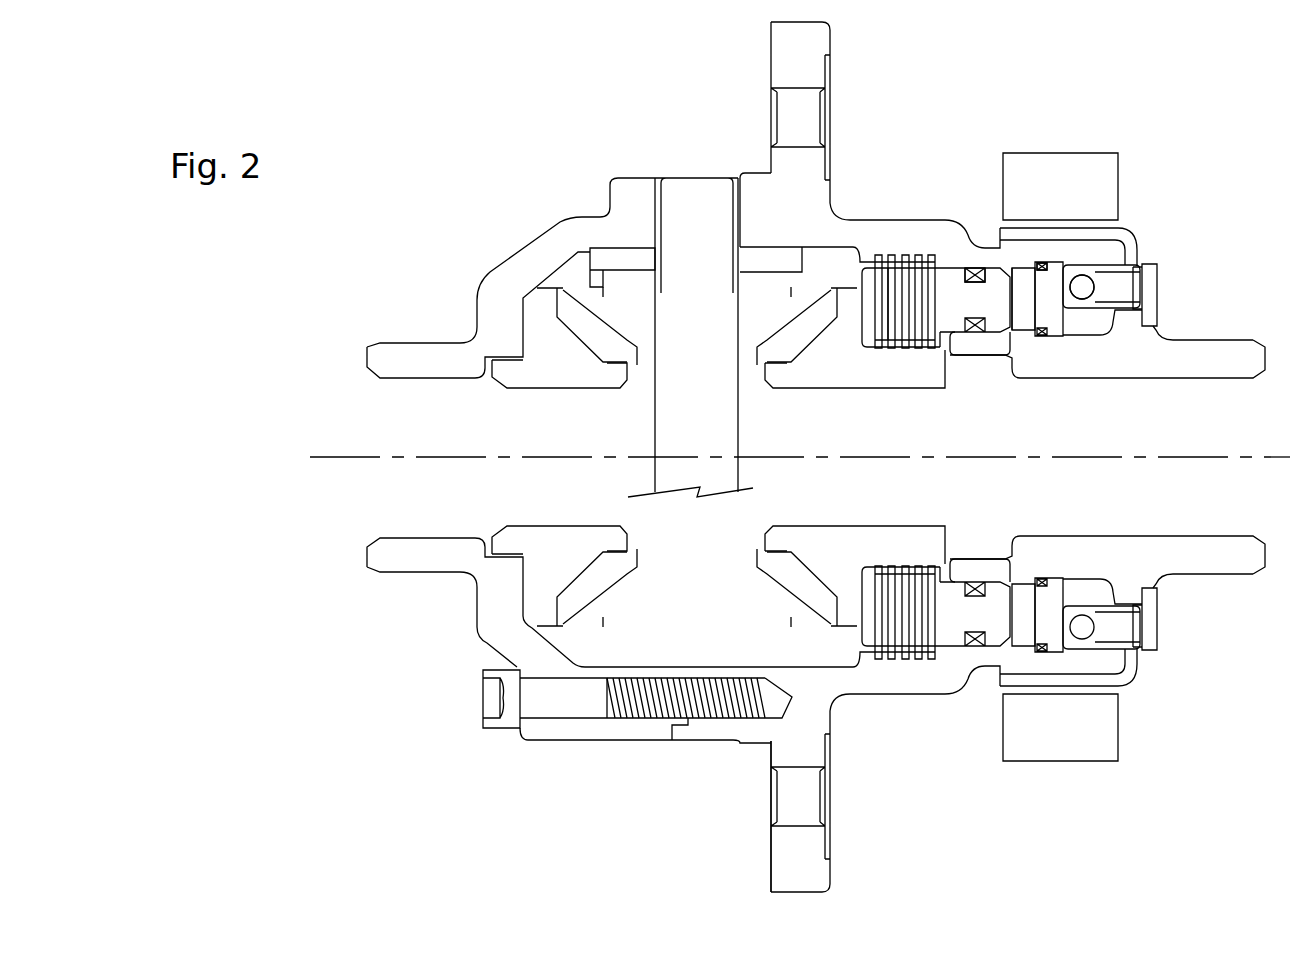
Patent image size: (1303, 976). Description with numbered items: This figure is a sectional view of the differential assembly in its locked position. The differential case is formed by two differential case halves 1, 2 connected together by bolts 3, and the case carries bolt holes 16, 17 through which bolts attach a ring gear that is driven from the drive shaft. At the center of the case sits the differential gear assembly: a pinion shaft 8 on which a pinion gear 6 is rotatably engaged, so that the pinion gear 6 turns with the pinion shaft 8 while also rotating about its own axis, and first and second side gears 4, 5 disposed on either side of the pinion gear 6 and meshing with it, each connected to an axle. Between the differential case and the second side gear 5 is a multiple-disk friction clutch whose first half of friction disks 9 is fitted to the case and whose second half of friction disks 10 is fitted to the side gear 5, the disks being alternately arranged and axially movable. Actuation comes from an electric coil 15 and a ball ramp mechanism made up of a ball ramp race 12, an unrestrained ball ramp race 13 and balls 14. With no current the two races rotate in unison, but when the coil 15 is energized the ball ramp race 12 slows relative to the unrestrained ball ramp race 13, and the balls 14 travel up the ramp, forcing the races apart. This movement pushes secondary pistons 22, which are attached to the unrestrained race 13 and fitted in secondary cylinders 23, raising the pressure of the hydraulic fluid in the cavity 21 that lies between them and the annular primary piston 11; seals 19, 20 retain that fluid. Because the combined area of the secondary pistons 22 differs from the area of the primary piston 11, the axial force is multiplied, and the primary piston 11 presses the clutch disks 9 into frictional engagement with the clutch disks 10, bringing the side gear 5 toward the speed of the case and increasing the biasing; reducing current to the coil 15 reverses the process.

The differential case half 1 is at (575, 733).
The differential case half 2 is at (720, 733).
The bolt 3 is at (497, 728).
The first side gear 4 is at (543, 588).
The second side gear 5 is at (988, 370).
The pinion gear 6 is at (622, 283).
The pinion shaft 8 is at (696, 202).
The friction disks (first half) 9 is at (880, 327).
The friction disks (second half) 10 is at (888, 347).
The primary piston 11 is at (948, 325).
The ball ramp race 12 is at (1130, 240).
The unrestrained ball ramp race 13 is at (1073, 272).
The ball 14 is at (1093, 291).
The coil 15 is at (1113, 186).
The bolt hole 16 is at (828, 798).
The bolt hole 17 is at (770, 115).
The seal 19 is at (975, 262).
The seal 20 is at (1040, 264).
The cavity 21 is at (1012, 333).
The secondary piston 22 is at (1062, 325).
The secondary cylinder 23 is at (1030, 332).